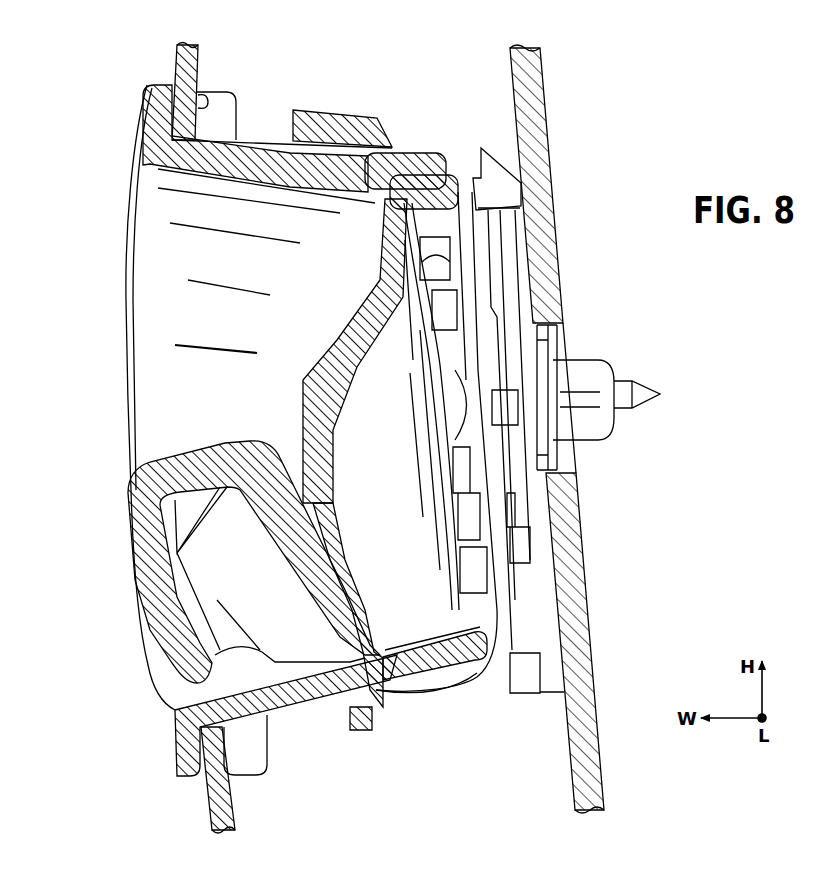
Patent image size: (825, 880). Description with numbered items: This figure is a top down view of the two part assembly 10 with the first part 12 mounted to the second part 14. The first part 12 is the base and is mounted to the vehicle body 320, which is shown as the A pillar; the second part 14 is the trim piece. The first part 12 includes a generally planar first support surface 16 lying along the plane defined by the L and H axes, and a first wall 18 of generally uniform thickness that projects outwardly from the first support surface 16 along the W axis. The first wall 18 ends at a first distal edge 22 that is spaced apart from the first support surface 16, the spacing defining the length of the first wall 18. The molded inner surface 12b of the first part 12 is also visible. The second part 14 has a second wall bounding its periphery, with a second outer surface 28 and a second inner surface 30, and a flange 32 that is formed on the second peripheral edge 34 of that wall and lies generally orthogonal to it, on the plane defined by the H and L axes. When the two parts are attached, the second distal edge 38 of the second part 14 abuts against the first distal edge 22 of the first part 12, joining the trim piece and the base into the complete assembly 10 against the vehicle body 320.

The two part assembly 10 is at (386, 104).
The first part 12 is at (470, 697).
The inner surface 12b is at (418, 642).
The second part 14 is at (110, 632).
The first support surface 16 is at (440, 186).
The first wall 18 is at (432, 680).
The first distal edge 22 is at (381, 652).
The second outer surface 28 is at (262, 145).
The second inner surface 30 is at (229, 176).
The flange 32 is at (152, 106).
The second peripheral edge 34 is at (157, 168).
The second distal edge 38 is at (382, 707).
The vehicle body 320 is at (547, 238).